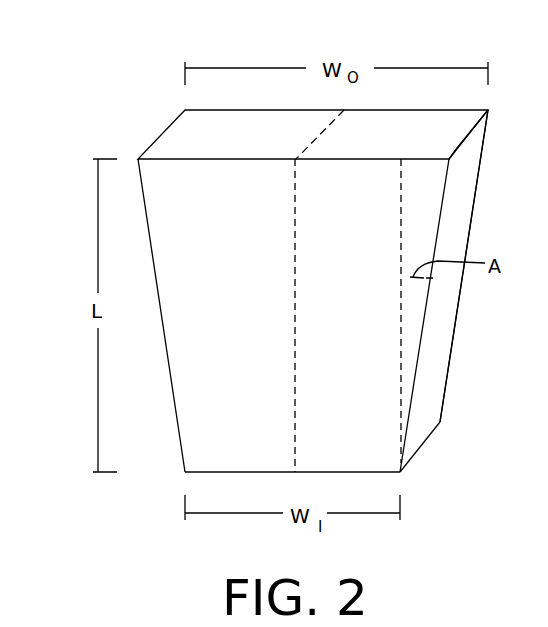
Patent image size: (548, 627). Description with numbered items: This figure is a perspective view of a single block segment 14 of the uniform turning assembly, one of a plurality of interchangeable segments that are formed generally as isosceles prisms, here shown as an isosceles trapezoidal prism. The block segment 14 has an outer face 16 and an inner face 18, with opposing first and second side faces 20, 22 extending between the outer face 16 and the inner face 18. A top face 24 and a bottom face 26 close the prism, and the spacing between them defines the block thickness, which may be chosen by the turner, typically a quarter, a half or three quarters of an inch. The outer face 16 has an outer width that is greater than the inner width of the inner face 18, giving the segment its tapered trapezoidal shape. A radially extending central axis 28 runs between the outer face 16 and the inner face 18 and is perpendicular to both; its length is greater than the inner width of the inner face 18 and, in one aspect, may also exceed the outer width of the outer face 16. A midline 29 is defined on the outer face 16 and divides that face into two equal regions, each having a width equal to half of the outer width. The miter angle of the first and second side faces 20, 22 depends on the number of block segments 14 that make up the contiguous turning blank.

The block segment 14 is at (278, 293).
The outer face 16 is at (450, 134).
The inner face 18 is at (245, 473).
The first side face 20 is at (165, 340).
The second side face 22 is at (444, 345).
The top face 24 is at (387, 435).
The bottom face 26 is at (478, 178).
The central axis 28 is at (296, 241).
The midline 29 is at (324, 132).